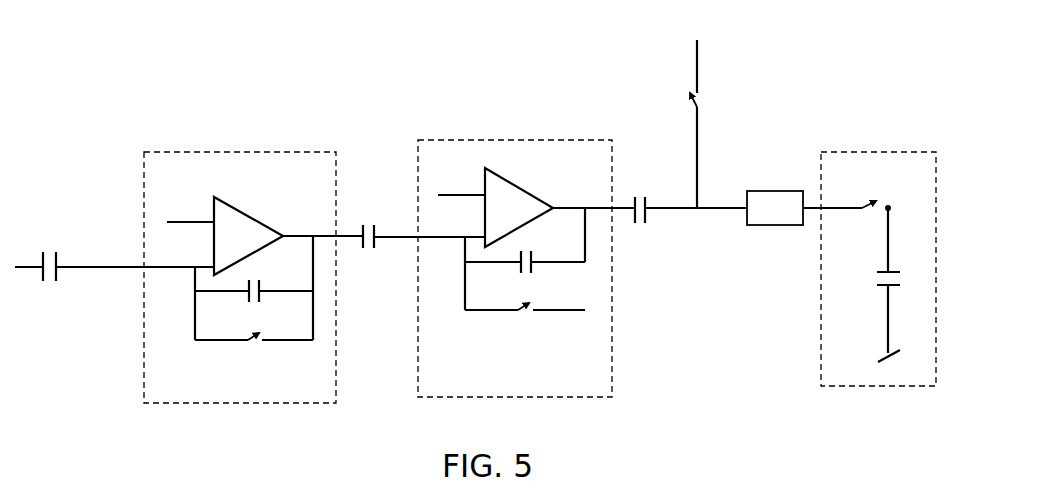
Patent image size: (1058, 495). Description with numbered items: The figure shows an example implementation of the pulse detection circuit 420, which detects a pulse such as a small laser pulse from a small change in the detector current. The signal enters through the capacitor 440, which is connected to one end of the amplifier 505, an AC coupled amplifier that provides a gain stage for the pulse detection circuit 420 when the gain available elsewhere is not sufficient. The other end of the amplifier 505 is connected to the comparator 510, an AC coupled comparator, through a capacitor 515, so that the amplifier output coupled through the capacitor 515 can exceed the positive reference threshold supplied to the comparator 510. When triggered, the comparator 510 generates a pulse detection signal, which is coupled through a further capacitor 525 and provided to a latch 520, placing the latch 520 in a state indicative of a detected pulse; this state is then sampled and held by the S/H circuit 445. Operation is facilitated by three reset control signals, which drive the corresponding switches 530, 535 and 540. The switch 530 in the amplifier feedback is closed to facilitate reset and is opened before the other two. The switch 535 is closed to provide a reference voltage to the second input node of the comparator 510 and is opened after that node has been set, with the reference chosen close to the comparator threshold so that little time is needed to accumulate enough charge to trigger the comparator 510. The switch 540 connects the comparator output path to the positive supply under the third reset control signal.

The pulse detection circuit 420 is at (131, 45).
The capacitor 440 is at (47, 284).
The S/H circuit 445 is at (898, 388).
The amplifier 505 is at (176, 152).
The comparator 510 is at (445, 140).
The capacitor 515 is at (370, 256).
The latch 520 is at (775, 191).
The output coupling capacitor 525 is at (645, 228).
The switch 530 is at (255, 346).
The switch 535 is at (525, 316).
The switch 540 is at (701, 100).